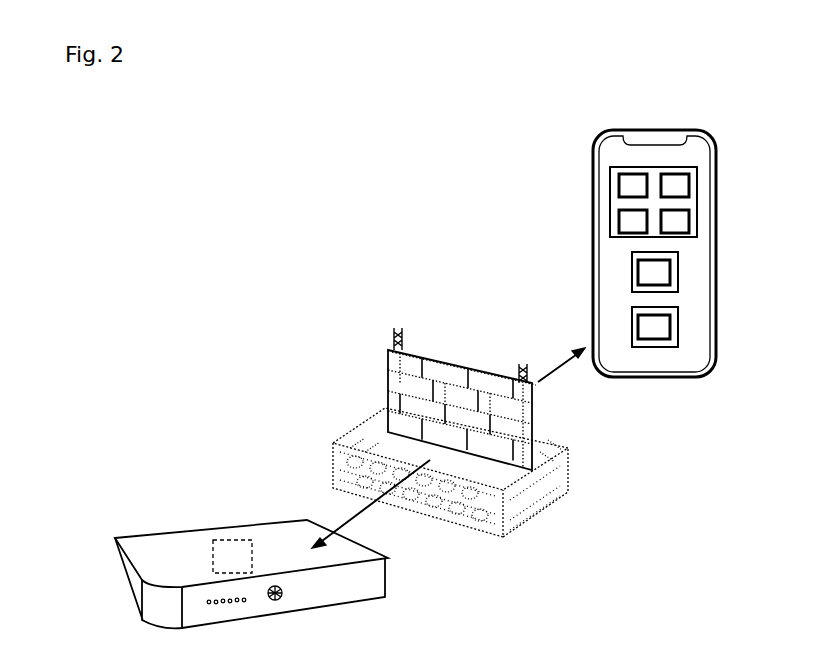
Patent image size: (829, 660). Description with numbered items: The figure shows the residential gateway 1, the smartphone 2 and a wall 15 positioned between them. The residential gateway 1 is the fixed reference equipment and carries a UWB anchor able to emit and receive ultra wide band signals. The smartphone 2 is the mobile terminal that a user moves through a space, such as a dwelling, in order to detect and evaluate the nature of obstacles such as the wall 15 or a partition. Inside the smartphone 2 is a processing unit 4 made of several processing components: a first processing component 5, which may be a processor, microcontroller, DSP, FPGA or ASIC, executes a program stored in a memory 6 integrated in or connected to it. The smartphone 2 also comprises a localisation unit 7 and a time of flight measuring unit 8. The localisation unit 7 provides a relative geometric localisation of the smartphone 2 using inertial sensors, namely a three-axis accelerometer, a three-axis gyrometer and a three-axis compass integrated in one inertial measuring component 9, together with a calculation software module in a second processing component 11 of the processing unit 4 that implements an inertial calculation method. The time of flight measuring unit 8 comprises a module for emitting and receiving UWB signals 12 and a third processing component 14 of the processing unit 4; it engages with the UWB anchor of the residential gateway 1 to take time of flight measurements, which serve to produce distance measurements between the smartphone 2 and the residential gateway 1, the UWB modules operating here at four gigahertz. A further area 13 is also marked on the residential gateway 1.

The residential gateway 1 is at (257, 522).
The smartphone 2 is at (668, 129).
The processing unit 4 is at (697, 167).
The first processing component 5 is at (619, 182).
The memory 6 is at (689, 182).
The localisation unit 7 is at (678, 265).
The time of flight measuring unit 8 is at (678, 320).
The inertial measuring component 9 is at (632, 265).
The second processing component 11 is at (689, 218).
The module for emitting and receiving UWB signals 12 is at (632, 320).
The communication area 13 is at (217, 526).
The third processing component 14 is at (619, 215).
The wall 15 is at (388, 363).